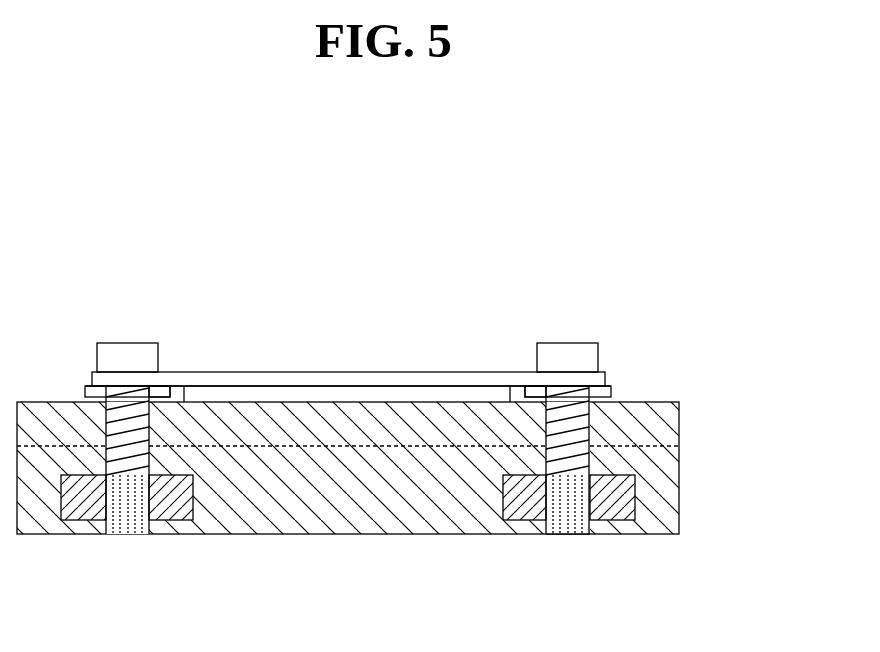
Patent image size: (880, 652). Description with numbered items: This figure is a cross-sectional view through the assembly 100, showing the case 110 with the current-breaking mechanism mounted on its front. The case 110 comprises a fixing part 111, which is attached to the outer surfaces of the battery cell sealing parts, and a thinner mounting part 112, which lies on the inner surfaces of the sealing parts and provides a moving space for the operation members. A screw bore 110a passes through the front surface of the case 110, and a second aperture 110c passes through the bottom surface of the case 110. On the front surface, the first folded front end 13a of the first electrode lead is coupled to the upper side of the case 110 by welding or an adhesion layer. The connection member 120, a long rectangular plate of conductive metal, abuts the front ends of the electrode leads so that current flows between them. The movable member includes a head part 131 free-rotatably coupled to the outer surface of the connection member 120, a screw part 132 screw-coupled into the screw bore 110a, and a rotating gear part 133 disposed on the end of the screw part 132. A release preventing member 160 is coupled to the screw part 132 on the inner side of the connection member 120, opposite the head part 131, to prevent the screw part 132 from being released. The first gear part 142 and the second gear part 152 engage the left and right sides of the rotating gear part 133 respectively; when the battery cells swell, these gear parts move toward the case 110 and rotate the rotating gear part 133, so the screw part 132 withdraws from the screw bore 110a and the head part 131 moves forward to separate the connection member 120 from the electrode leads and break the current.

The battery module assembly 100 is at (503, 281).
The case 110 is at (317, 331).
The fixing part 111 is at (247, 415).
The mounting part 112 is at (318, 497).
The screw bore 110a is at (547, 383).
The second aperture 110c is at (548, 534).
The connection member 120 is at (402, 380).
The first folded front end 13a is at (461, 393).
The head part 131 is at (583, 358).
The screw part 132 is at (583, 420).
The rotating gear part 133 is at (734, 361).
The first gear part 142 is at (517, 534).
The second gear part 152 is at (612, 534).
The release preventing member 160 is at (162, 393).